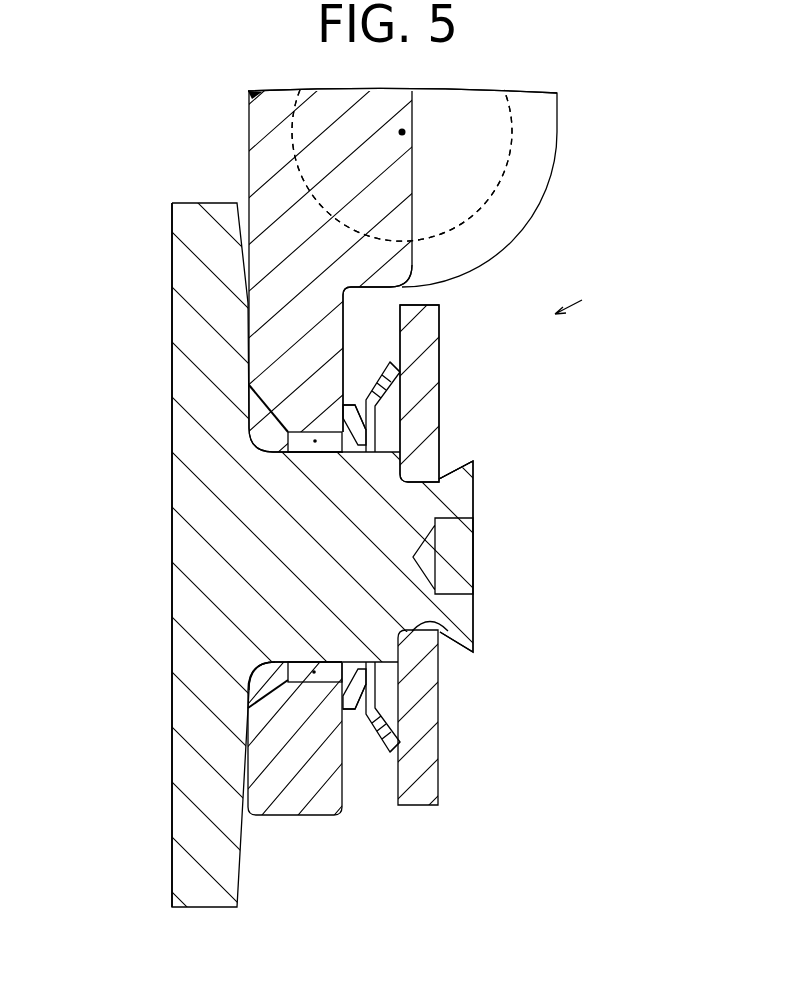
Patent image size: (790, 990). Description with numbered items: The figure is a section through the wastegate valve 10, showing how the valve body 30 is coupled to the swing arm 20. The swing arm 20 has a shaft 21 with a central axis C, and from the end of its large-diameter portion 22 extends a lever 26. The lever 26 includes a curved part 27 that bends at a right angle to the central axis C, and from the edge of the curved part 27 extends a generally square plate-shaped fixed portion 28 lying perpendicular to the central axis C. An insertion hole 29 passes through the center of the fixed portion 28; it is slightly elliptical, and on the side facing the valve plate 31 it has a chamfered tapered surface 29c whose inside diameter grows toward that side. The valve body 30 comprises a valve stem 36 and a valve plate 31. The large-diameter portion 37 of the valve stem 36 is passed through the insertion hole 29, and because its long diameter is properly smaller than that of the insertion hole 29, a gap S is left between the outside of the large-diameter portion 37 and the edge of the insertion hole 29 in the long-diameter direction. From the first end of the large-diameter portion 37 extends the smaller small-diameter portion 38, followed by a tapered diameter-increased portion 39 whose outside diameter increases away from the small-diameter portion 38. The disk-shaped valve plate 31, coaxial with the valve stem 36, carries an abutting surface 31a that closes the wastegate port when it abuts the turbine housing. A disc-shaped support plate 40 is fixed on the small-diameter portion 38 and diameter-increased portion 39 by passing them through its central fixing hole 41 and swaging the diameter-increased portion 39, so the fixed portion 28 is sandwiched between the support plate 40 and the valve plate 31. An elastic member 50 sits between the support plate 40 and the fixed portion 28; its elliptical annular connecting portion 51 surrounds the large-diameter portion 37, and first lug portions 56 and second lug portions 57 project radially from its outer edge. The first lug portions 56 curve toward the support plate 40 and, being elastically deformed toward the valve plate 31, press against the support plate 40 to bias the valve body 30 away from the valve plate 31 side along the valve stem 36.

The wastegate valve 10 is at (585, 300).
The swing arm 20 is at (545, 198).
The shaft 21 is at (512, 148).
The large-diameter portion 22 is at (472, 165).
The lever 26 is at (300, 817).
The curved part 27 is at (558, 120).
The fixed portion 28 is at (345, 320).
The insertion hole 29 is at (325, 668).
The tapered surface 29c is at (268, 695).
The valve body 30 is at (243, 877).
The valve plate 31 is at (172, 856).
The abutting surface 31a is at (172, 802).
The valve stem 36 is at (474, 487).
The large-diameter portion 37 is at (383, 452).
The small-diameter portion 38 is at (413, 476).
The diameter-increased portion 39 is at (463, 463).
The support plate 40 is at (425, 807).
The fixing hole 41 is at (447, 637).
The elastic member 50 is at (392, 360).
The connecting portion 51 is at (360, 407).
The first lug portions 56 is at (378, 402).
The second lug portions 57 is at (343, 390).
The central axis C is at (406, 132).
The gap S is at (315, 443).